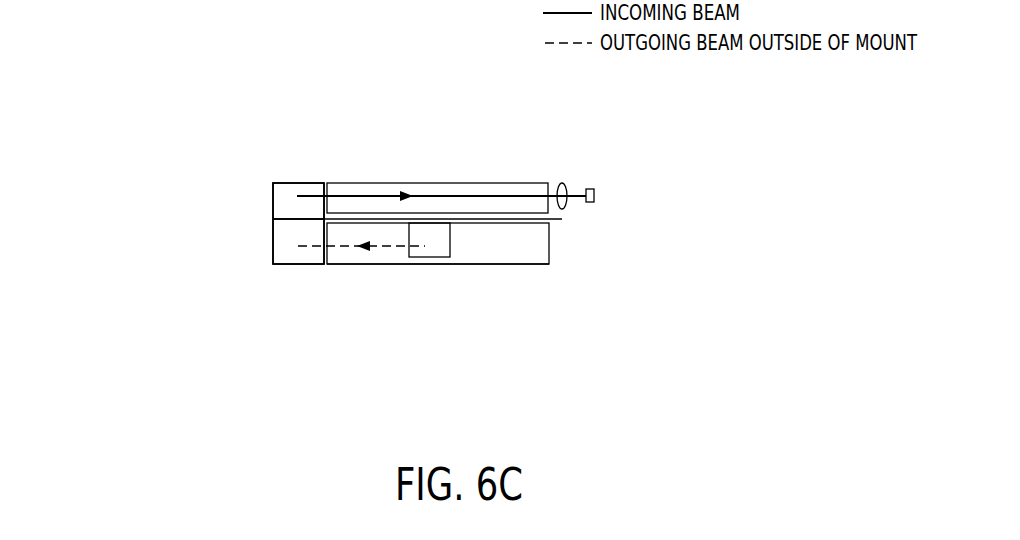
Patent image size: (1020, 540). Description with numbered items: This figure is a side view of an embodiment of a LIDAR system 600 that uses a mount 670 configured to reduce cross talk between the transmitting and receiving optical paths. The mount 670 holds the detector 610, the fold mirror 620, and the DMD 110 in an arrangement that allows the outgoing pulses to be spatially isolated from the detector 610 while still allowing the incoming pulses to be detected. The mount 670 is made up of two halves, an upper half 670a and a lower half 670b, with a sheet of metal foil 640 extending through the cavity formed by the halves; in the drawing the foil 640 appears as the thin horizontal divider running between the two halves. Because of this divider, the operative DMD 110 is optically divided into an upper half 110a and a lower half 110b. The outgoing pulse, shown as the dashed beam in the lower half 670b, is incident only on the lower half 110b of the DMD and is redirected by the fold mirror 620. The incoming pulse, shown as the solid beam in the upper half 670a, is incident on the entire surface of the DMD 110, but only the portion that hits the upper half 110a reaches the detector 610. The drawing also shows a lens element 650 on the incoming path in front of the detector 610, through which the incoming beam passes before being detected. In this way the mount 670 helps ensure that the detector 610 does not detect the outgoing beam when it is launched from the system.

The LIDAR system 600 is at (128, 145).
The DMD 110 is at (265, 172).
The upper half of DMD 110a is at (273, 205).
The lower half of DMD 110b is at (273, 241).
The sheet of metal foil 640 is at (556, 222).
The upper half of mount 670a is at (443, 180).
The mount 670 is at (363, 265).
The lower half of mount 670b is at (542, 267).
The fold mirror 620 is at (453, 247).
The lens 650 is at (564, 183).
The detector 610 is at (594, 190).